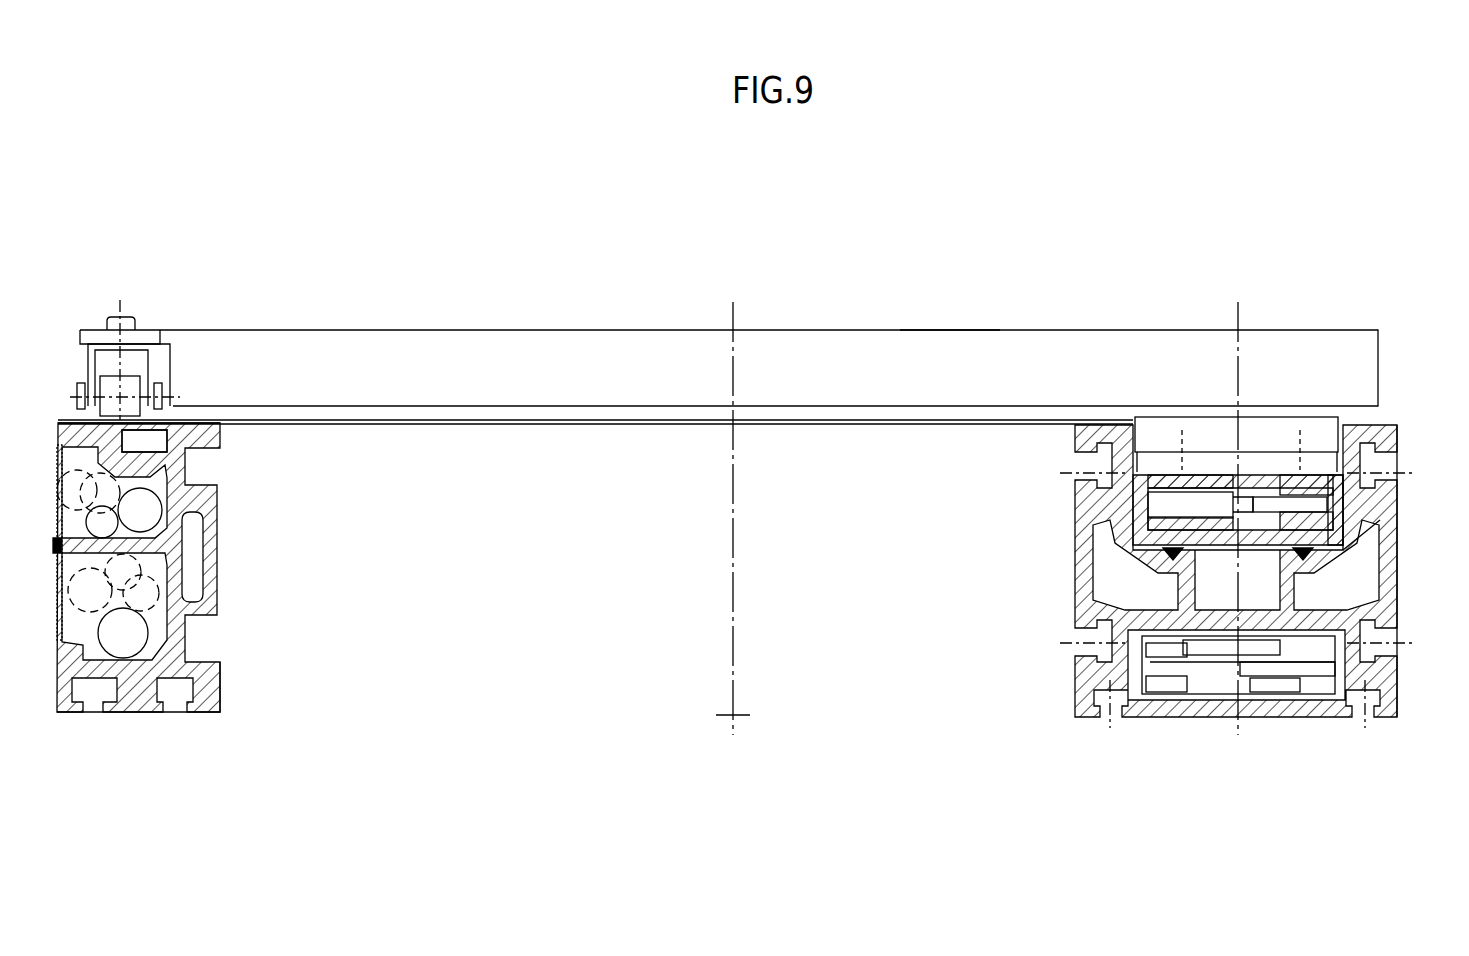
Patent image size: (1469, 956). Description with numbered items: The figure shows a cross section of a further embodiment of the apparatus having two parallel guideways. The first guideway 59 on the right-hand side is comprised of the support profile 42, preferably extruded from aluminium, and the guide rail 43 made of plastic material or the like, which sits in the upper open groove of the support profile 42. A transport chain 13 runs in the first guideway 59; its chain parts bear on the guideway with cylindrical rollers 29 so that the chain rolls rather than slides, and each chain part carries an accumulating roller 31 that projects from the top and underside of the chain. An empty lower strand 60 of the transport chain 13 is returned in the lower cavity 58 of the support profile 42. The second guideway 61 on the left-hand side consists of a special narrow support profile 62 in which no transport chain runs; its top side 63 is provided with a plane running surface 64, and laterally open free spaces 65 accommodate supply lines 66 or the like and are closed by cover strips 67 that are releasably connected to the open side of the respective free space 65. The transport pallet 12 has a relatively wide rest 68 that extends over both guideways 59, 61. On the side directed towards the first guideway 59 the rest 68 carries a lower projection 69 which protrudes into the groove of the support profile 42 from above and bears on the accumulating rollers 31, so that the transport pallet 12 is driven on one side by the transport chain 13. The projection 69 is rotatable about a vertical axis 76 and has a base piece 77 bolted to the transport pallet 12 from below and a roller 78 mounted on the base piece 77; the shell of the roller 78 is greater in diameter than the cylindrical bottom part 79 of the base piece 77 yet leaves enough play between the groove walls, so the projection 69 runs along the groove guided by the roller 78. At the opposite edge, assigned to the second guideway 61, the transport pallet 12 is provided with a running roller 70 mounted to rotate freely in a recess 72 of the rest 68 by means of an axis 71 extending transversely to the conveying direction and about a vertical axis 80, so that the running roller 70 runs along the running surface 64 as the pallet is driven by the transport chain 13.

The transport pallet 12 is at (588, 358).
The transport chain 13 is at (1190, 472).
The roller 29 is at (1308, 470).
The accumulating roller 31 is at (1255, 478).
The support profile 42 is at (1399, 552).
The guide rail 43 is at (1335, 553).
The cavity 58 is at (1152, 638).
The first guideway 59 is at (1198, 740).
The lower strand 60 is at (1290, 680).
The second guideway 61 is at (143, 740).
The support profile 62 is at (222, 680).
The top side 63 is at (150, 432).
The running surface 64 is at (192, 414).
The free spaces 65 is at (137, 477).
The supply lines 66 is at (143, 515).
The cover strips 67 is at (56, 478).
The rest 68 is at (933, 376).
The projection 69 is at (1153, 397).
The running roller 70 is at (162, 350).
The axis 71 is at (87, 385).
The recess 72 is at (115, 382).
The vertical axis 76 is at (1228, 670).
The base piece 77 is at (1200, 500).
The roller 78 is at (1328, 432).
The cylindrical bottom part 79 is at (1280, 467).
The vertical axis 80 is at (120, 302).